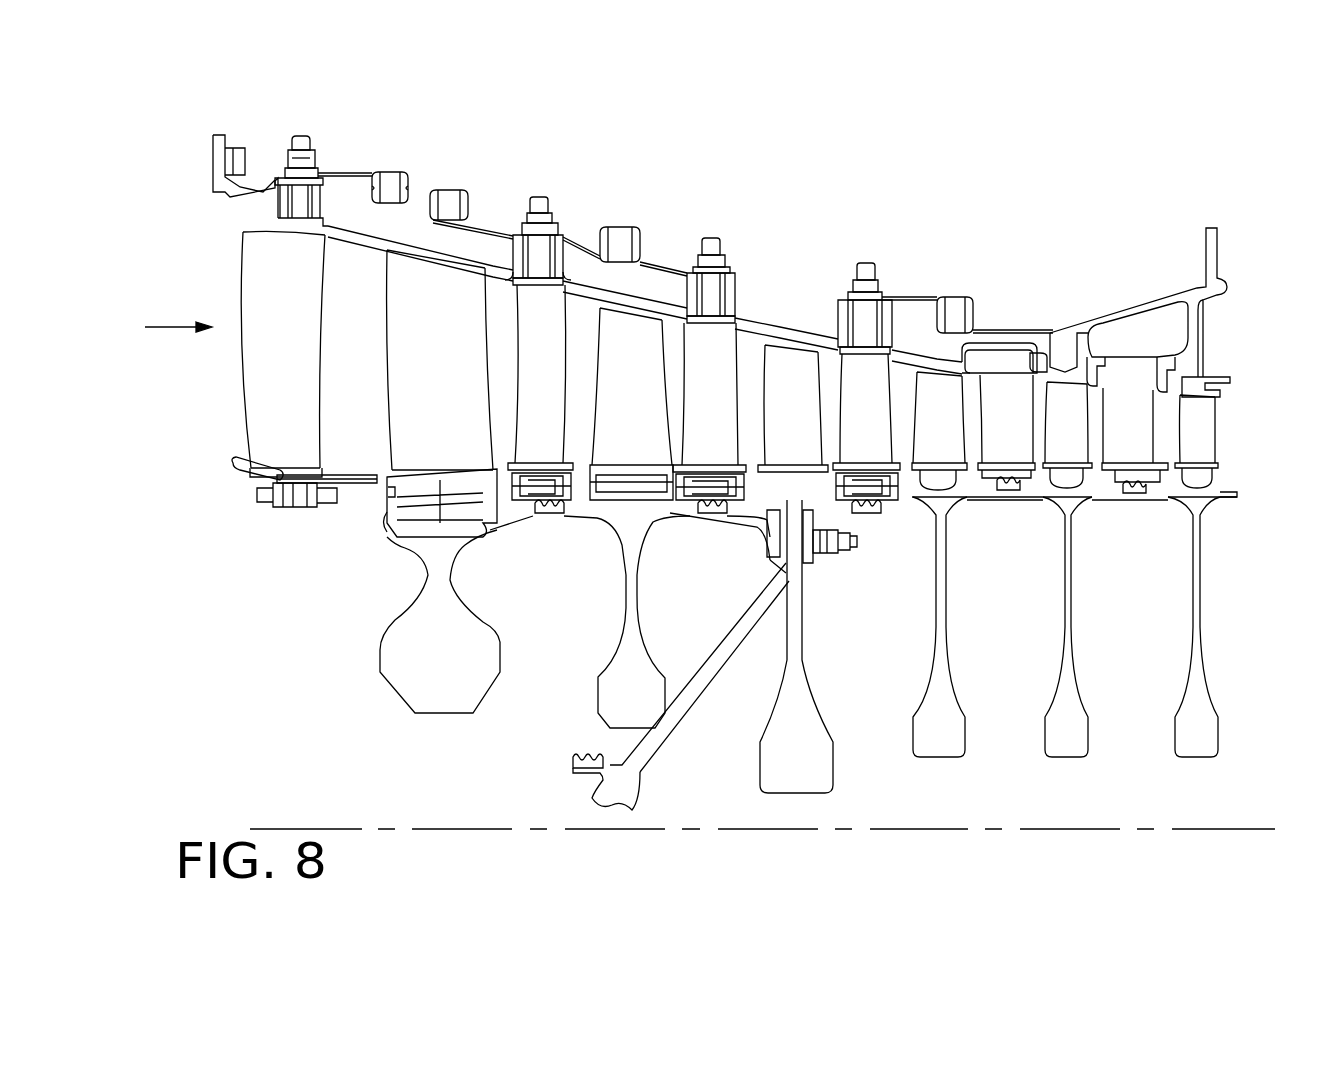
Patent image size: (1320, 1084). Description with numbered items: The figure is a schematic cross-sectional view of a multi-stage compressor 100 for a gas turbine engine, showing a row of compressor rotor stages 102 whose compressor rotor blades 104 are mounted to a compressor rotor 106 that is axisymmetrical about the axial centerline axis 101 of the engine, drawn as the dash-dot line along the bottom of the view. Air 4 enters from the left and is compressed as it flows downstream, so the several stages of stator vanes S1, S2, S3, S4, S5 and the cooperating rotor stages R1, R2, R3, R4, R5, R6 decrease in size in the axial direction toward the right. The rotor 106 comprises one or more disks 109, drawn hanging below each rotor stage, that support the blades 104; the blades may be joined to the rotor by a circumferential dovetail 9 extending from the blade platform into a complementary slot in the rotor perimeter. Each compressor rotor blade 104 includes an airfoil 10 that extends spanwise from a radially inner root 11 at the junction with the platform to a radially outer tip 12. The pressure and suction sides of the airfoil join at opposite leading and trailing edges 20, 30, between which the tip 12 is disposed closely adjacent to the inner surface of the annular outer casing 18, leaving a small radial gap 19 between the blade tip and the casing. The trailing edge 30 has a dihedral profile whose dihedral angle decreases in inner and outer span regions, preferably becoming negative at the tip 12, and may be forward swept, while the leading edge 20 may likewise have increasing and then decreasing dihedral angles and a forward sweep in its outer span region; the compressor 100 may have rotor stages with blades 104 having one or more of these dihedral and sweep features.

The air 4 is at (176, 325).
The circumferential dovetail 9 is at (947, 485).
The airfoil 10 is at (940, 367).
The root 11 is at (433, 473).
The tip 12 is at (463, 271).
The outer casing 18 is at (377, 243).
The gap 19 is at (490, 278).
The leading edge 20 is at (395, 374).
The trailing edge 30 is at (490, 335).
The multi-stage compressor 100 is at (290, 128).
The axial centerline axis 101 is at (1183, 829).
The compressor rotor stage 102 is at (353, 541).
The compressor rotor blade 104 is at (398, 425).
The compressor rotor 106 is at (418, 540).
The disk 109 is at (485, 655).
The rotor stage 1 R1 is at (449, 391).
The rotor stage 2 R2 is at (641, 397).
The rotor stage 3 R3 is at (803, 412).
The rotor stage 4 R4 is at (953, 432).
The rotor stage 5 R5 is at (1079, 434).
The rotor stage 6 R6 is at (1211, 457).
The stator stage 1 S1 is at (559, 406).
The stator stage 2 S2 is at (723, 397).
The stator stage 3 S3 is at (873, 412).
The stator stage 4 S4 is at (1019, 426).
The stator stage 5 S5 is at (1141, 437).